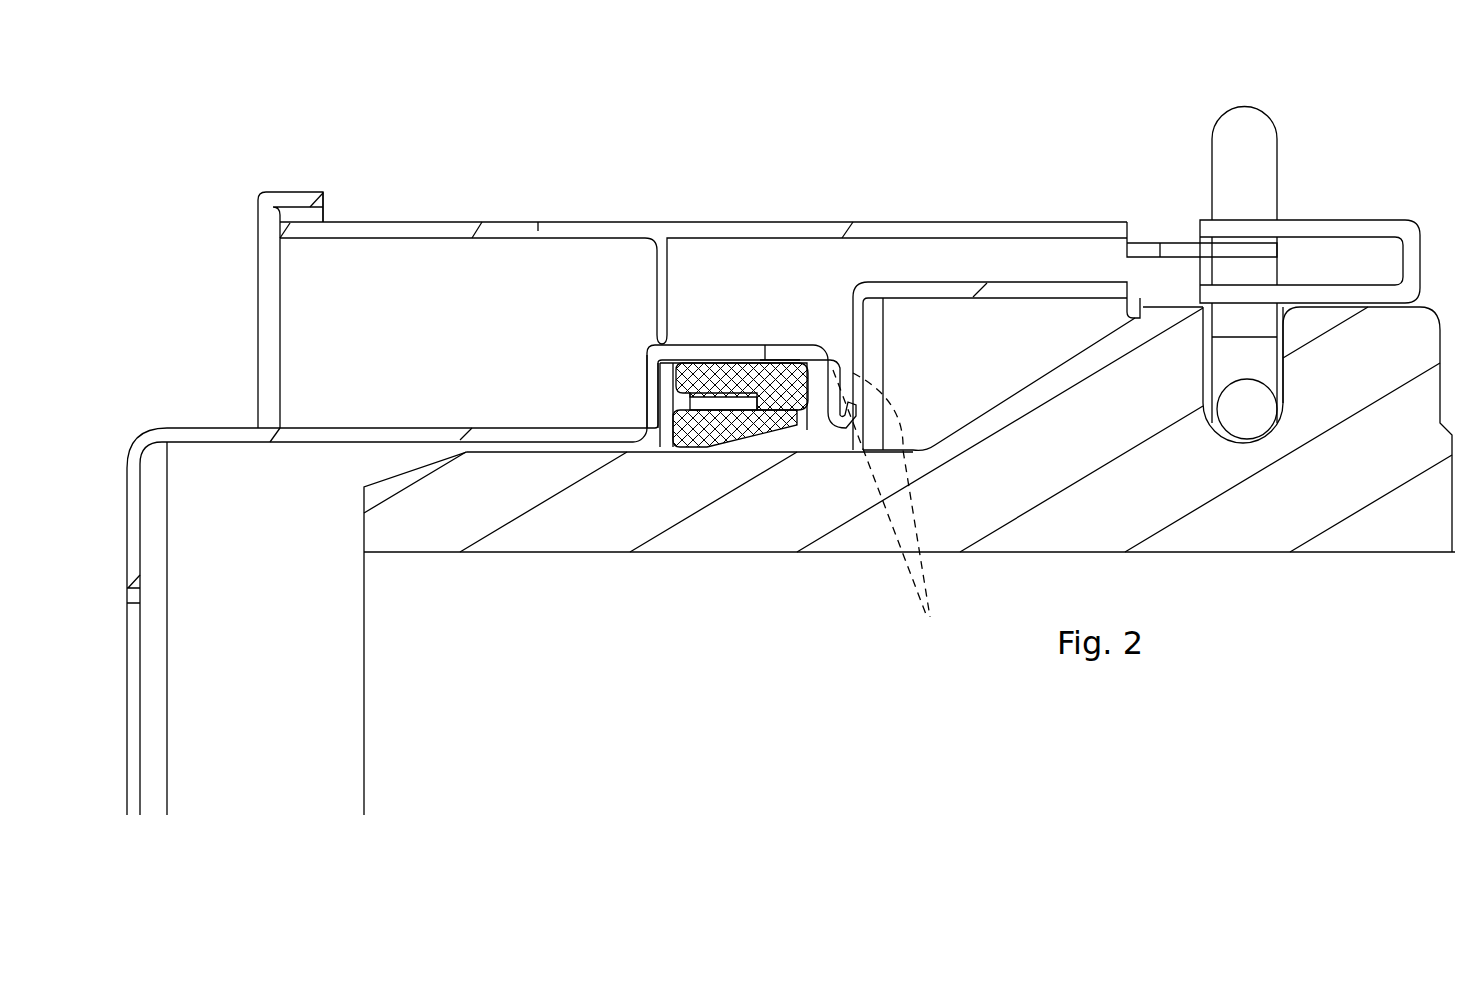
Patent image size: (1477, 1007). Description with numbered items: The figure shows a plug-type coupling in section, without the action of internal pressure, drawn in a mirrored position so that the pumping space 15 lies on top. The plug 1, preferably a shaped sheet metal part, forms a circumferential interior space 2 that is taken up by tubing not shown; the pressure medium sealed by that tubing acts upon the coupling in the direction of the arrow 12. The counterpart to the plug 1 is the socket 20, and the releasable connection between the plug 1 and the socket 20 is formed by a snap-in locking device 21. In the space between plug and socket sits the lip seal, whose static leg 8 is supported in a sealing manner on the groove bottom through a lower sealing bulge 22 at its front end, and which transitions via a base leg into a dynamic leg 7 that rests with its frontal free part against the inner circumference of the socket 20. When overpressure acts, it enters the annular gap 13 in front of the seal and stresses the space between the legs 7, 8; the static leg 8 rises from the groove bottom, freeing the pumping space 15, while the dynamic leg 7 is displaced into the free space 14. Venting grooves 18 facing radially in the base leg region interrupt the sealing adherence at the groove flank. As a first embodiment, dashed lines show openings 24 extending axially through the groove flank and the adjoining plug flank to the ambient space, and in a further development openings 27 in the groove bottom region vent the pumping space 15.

The plug 1 is at (511, 282).
The circumferential interior space 2 is at (395, 287).
The dynamic leg 7 is at (713, 443).
The static leg 8 is at (725, 367).
The arrow 12 is at (362, 462).
The annular gap 13 is at (665, 373).
The free space 14 is at (788, 440).
The pumping space 15 is at (740, 360).
The venting grooves 18 is at (815, 360).
The socket 20 is at (537, 542).
The snap-in locking device 21 is at (1178, 168).
The lower sealing bulge 22 is at (693, 363).
The openings 24 is at (887, 515).
The openings 27 is at (773, 353).